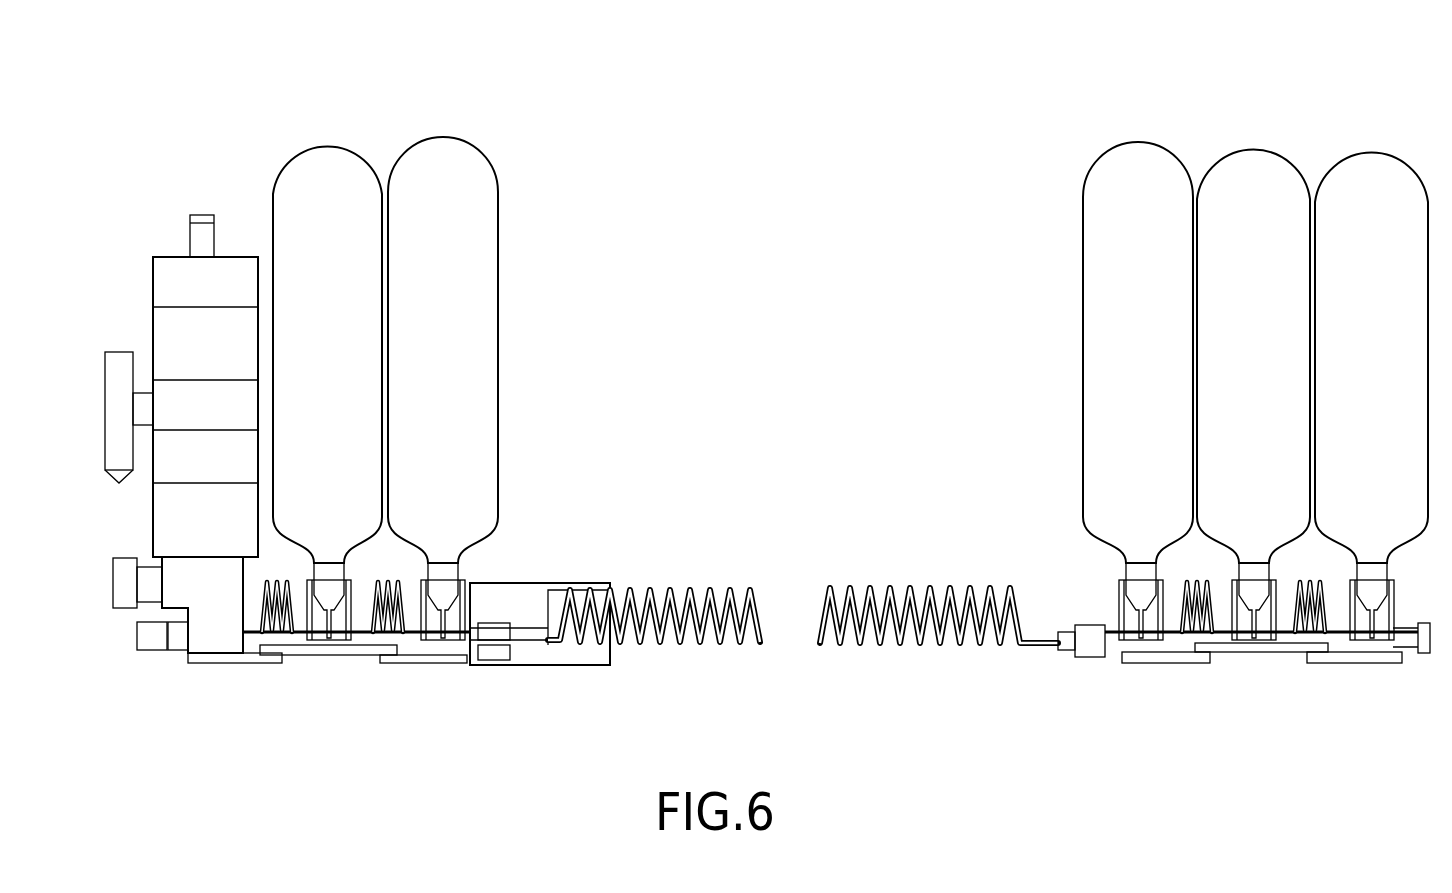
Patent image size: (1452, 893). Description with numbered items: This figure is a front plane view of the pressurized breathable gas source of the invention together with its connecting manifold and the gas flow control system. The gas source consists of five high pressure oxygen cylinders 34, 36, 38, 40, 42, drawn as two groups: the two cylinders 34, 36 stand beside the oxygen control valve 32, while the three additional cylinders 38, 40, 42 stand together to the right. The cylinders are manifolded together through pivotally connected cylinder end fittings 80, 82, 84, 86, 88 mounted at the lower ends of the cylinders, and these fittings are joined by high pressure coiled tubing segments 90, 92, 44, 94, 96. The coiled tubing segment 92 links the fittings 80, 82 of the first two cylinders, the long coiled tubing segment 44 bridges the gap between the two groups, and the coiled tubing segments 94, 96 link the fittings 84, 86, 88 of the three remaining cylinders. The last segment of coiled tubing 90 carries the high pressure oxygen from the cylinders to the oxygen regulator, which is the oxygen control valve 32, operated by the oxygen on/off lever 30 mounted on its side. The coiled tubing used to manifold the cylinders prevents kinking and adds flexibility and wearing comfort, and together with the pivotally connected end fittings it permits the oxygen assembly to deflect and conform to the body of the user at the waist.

The oxygen on/off lever 30 is at (118, 412).
The oxygen control valve 32 is at (160, 262).
The oxygen cylinder 34 is at (327, 140).
The oxygen cylinder 36 is at (447, 145).
The oxygen cylinder 38 is at (1135, 150).
The oxygen cylinder 40 is at (1256, 150).
The oxygen cylinder 42 is at (1368, 157).
The coiled tubing segment 44 is at (715, 646).
The cylinder end fitting 80 is at (362, 626).
The cylinder end fitting 82 is at (420, 622).
The cylinder end fitting 84 is at (1172, 632).
The cylinder end fitting 86 is at (1226, 628).
The cylinder end fitting 88 is at (1345, 628).
The coiled tubing segment 90 is at (282, 634).
The coiled tubing segment 92 is at (413, 630).
The coiled tubing segment 94 is at (1210, 634).
The coiled tubing segment 96 is at (1300, 632).